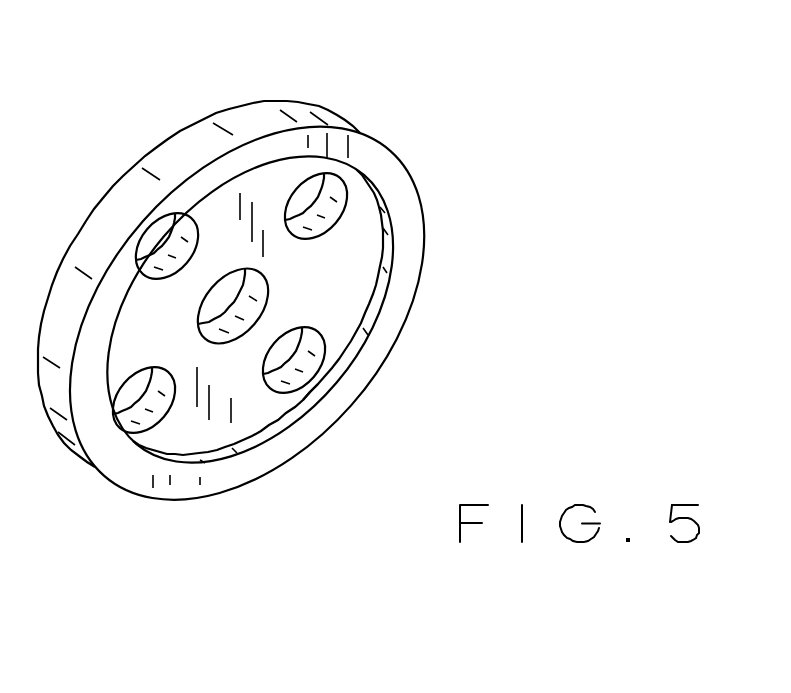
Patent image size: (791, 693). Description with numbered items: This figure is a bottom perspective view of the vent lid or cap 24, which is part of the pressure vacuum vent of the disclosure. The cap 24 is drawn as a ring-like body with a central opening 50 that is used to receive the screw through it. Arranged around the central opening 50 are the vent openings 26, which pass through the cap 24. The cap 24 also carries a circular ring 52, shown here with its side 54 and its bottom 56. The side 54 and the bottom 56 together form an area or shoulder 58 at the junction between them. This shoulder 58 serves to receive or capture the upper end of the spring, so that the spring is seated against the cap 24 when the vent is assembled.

The vent lid or cap 24 is at (323, 76).
The vent openings 26 is at (313, 192).
The central opening 50 is at (232, 277).
The circular ring 52 is at (343, 420).
The side 54 is at (369, 322).
The bottom 56 is at (337, 258).
The area or shoulder 58 is at (311, 405).